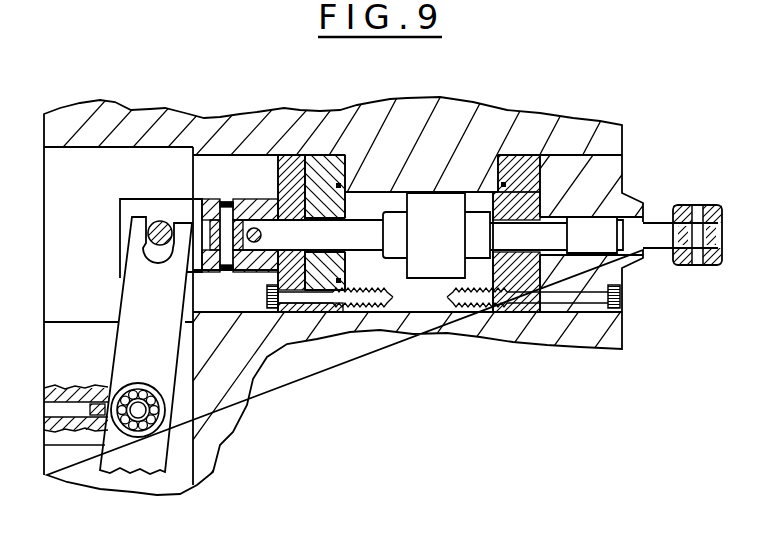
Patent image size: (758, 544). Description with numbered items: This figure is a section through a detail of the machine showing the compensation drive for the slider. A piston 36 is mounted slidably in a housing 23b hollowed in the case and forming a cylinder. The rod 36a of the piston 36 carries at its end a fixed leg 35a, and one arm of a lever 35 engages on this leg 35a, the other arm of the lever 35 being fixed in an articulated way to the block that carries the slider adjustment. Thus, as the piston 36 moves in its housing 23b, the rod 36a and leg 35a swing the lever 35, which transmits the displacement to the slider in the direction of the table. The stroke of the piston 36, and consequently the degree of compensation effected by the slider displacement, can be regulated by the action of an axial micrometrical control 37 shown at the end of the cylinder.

The housing 23b is at (392, 282).
The lever 35 is at (158, 462).
The leg 35a is at (138, 210).
The piston 36 is at (437, 268).
The rod 36a is at (275, 233).
The axial micrometrical control 37 is at (605, 232).